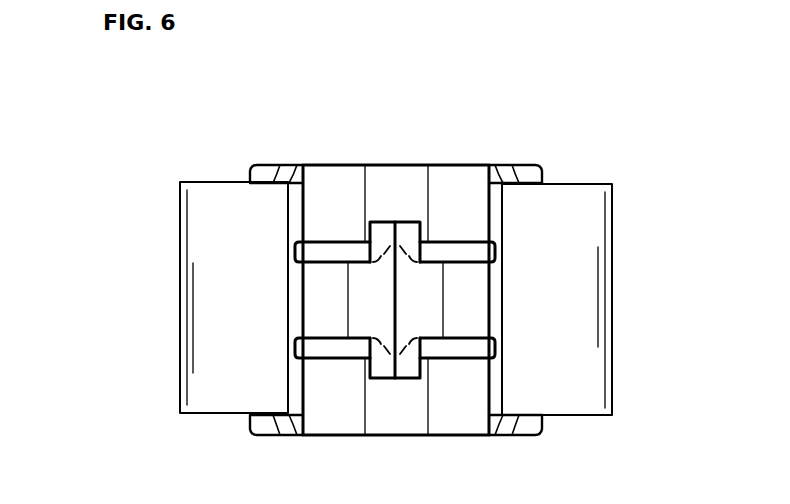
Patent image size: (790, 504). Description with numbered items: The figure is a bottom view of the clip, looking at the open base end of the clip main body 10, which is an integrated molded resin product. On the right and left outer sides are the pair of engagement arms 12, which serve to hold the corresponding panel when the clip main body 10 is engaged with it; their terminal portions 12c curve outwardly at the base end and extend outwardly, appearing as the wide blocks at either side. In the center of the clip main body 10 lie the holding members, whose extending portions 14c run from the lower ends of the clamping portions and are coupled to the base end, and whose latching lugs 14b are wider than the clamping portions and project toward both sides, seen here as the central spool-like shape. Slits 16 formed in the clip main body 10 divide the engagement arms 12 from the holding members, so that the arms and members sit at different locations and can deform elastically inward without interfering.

The clip main body 10 is at (288, 102).
The engagement arm 12 is at (452, 190).
The terminal portion 12c is at (206, 300).
The latching lug 14b is at (408, 232).
The extending portion 14c is at (322, 277).
The slit 16 is at (305, 250).